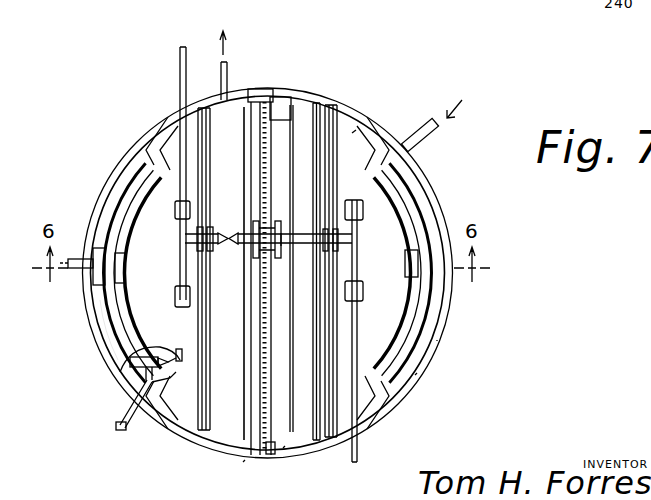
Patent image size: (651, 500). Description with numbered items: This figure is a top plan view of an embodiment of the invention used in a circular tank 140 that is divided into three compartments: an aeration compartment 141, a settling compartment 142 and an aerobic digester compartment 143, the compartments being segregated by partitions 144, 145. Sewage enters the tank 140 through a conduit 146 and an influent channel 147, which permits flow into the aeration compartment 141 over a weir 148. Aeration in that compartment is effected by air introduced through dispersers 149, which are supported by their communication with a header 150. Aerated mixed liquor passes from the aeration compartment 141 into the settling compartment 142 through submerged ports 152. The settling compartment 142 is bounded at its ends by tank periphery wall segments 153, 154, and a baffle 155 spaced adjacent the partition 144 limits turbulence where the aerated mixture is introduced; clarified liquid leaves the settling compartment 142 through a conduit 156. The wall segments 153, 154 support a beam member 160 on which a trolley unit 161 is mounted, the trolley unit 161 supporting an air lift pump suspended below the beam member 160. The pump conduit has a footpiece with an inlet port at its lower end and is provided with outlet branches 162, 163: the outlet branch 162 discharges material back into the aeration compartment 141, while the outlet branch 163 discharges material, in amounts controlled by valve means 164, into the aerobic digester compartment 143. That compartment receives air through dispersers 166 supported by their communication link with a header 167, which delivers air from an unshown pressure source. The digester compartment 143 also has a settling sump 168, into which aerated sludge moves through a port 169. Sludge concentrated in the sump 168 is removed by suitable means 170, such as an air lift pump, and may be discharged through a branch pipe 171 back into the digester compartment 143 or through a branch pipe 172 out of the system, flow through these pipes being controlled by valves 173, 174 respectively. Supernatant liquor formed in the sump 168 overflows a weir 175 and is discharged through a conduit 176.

The circular tank 140 is at (443, 212).
The aeration compartment 141 is at (398, 258).
The settling compartment 142 is at (228, 128).
The aerobic digester compartment 143 is at (168, 259).
The partition 144 is at (352, 133).
The partition 145 is at (199, 133).
The conduit 146 is at (430, 140).
The influent channel 147 is at (437, 340).
The weir 148 is at (412, 270).
The dispersers 149 is at (417, 372).
The header 150 is at (358, 455).
The submerged ports 152 is at (338, 135).
The tank periphery wall segment 153 is at (326, 196).
The tank periphery wall segment 154 is at (278, 455).
The baffle 155 is at (283, 448).
The conduit 156 is at (228, 68).
The beam member 160 is at (243, 462).
The trolley unit 161 is at (262, 258).
The outlet branch 162 is at (303, 250).
The outlet branch 163 is at (209, 261).
The valve means 164 is at (230, 250).
The dispersers 166 is at (145, 163).
The header 167 is at (180, 55).
The settling sump 168 is at (105, 330).
The port 169 is at (118, 282).
The sludge removal means 170 is at (140, 378).
The branch pipe 171 is at (156, 345).
The branch pipe 172 is at (125, 418).
The valve 173 is at (128, 362).
The valve 174 is at (160, 420).
The weir 175 is at (175, 212).
The conduit 176 is at (72, 268).